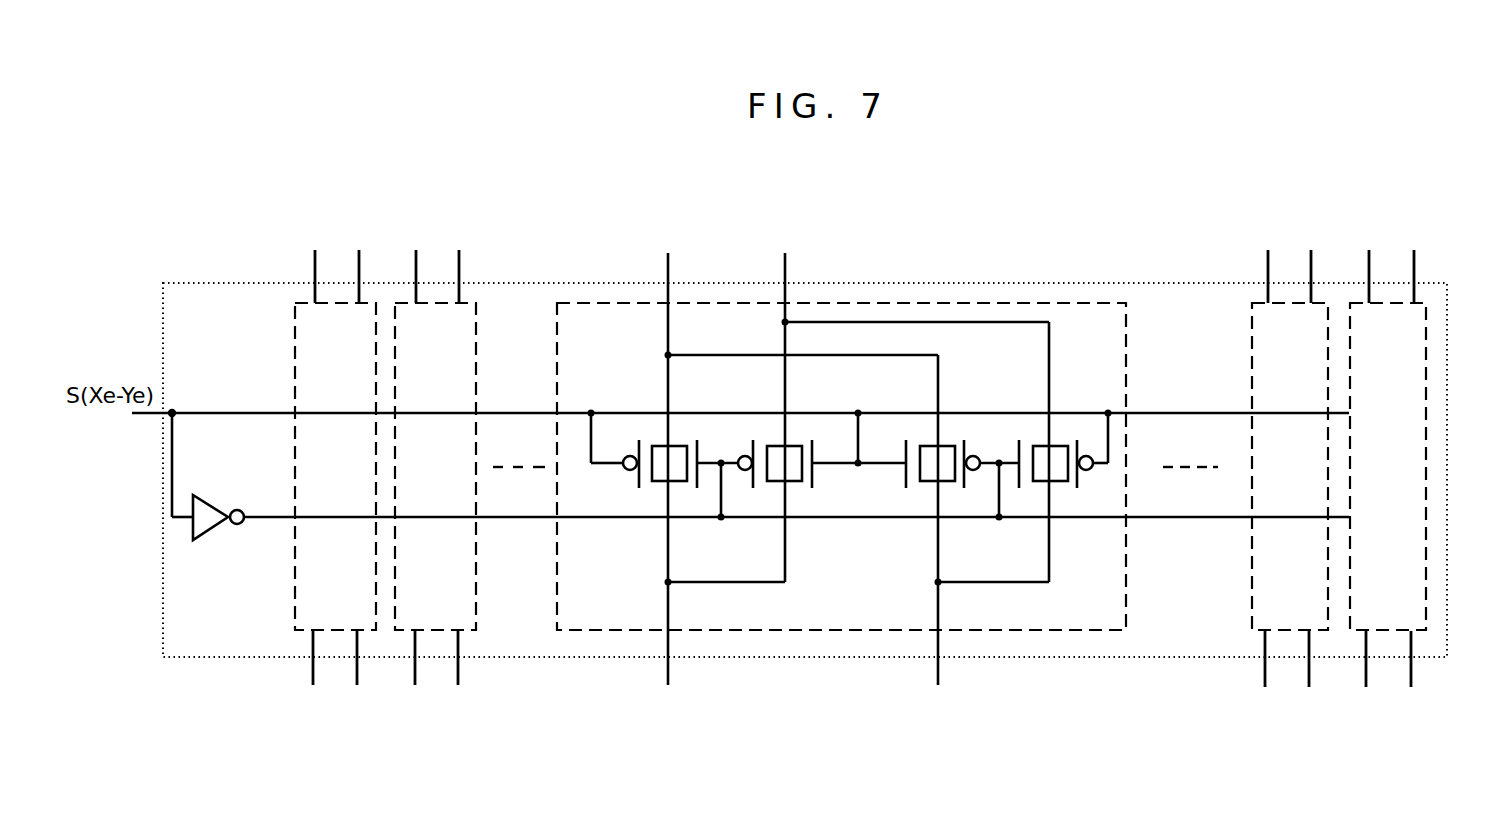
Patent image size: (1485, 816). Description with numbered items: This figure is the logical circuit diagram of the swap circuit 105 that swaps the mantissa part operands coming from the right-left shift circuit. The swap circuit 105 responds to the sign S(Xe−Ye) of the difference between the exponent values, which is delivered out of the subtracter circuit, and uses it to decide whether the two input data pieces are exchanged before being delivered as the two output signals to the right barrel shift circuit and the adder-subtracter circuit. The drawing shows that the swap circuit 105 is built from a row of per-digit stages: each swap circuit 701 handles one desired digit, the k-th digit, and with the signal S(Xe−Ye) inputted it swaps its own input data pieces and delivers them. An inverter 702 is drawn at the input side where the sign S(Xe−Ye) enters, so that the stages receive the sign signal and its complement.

The swap circuit 105 is at (978, 282).
The swap circuit at a desired digit 701 is at (292, 605).
The inverter 702 is at (208, 476).